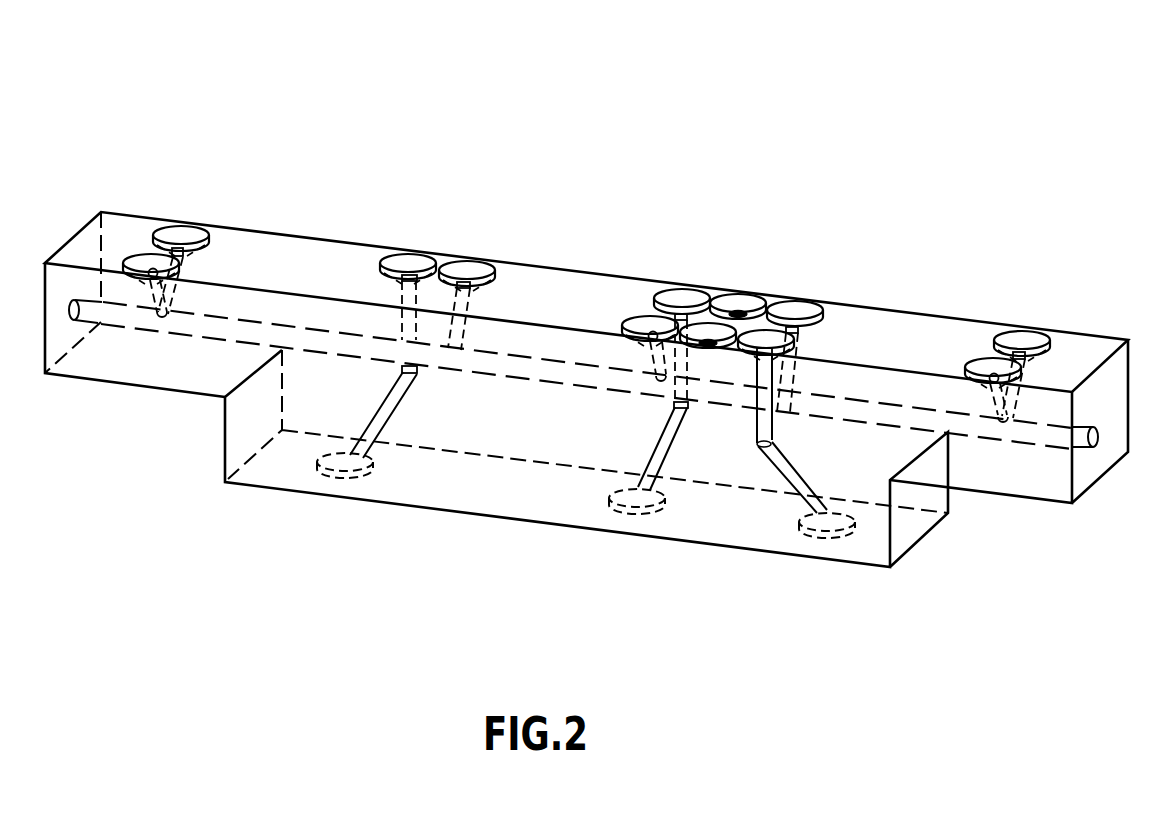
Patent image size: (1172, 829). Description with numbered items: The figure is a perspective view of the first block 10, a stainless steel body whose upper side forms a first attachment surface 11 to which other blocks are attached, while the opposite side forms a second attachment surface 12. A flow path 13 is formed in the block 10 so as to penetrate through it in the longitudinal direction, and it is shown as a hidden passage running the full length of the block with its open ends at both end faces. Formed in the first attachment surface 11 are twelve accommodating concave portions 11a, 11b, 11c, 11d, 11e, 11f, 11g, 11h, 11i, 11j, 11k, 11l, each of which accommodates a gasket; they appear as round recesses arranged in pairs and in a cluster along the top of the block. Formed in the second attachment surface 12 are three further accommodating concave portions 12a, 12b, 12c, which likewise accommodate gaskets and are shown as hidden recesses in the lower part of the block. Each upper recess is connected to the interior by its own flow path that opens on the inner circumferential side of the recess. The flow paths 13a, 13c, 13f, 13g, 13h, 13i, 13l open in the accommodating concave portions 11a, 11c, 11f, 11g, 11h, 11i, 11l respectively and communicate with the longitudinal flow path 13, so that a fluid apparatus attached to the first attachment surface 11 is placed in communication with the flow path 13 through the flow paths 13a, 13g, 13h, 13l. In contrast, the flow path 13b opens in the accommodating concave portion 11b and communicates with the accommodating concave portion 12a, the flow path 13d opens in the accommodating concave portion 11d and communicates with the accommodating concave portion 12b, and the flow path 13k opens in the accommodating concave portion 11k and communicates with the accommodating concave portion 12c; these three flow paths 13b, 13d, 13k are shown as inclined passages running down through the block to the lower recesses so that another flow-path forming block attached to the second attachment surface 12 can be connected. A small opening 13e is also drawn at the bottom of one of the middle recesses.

The block 10 is at (822, 163).
The first attachment surface 11 is at (882, 333).
The second attachment surface 12 is at (500, 490).
The flow path 13 is at (500, 366).
The accommodating concave portion 11a is at (174, 240).
The accommodating concave portion 11b is at (408, 273).
The accommodating concave portion 11c is at (464, 285).
The accommodating concave portion 11d is at (678, 300).
The accommodating concave portion 11e is at (750, 310).
The accommodating concave portion 11f is at (815, 305).
The accommodating concave portion 11g is at (1033, 343).
The accommodating concave portion 11h is at (140, 262).
The accommodating concave portion 11i is at (637, 330).
The accommodating concave portion 11j is at (708, 336).
The accommodating concave portion 11k is at (777, 340).
The accommodating concave portion 11l is at (982, 362).
The accommodating concave portion 12a is at (343, 465).
The accommodating concave portion 12b is at (625, 505).
The accommodating concave portion 12c is at (840, 528).
The flow path 13a is at (180, 273).
The flow path 13b is at (384, 258).
The flow path 13c is at (473, 300).
The flow path 13d is at (680, 405).
The branch channel 13e is at (738, 314).
The flow path 13f is at (782, 388).
The flow path 13g is at (1012, 400).
The flow path 13h is at (149, 278).
The flow path 13i is at (650, 367).
The flow path 13k is at (757, 415).
The flow path 13l is at (993, 385).